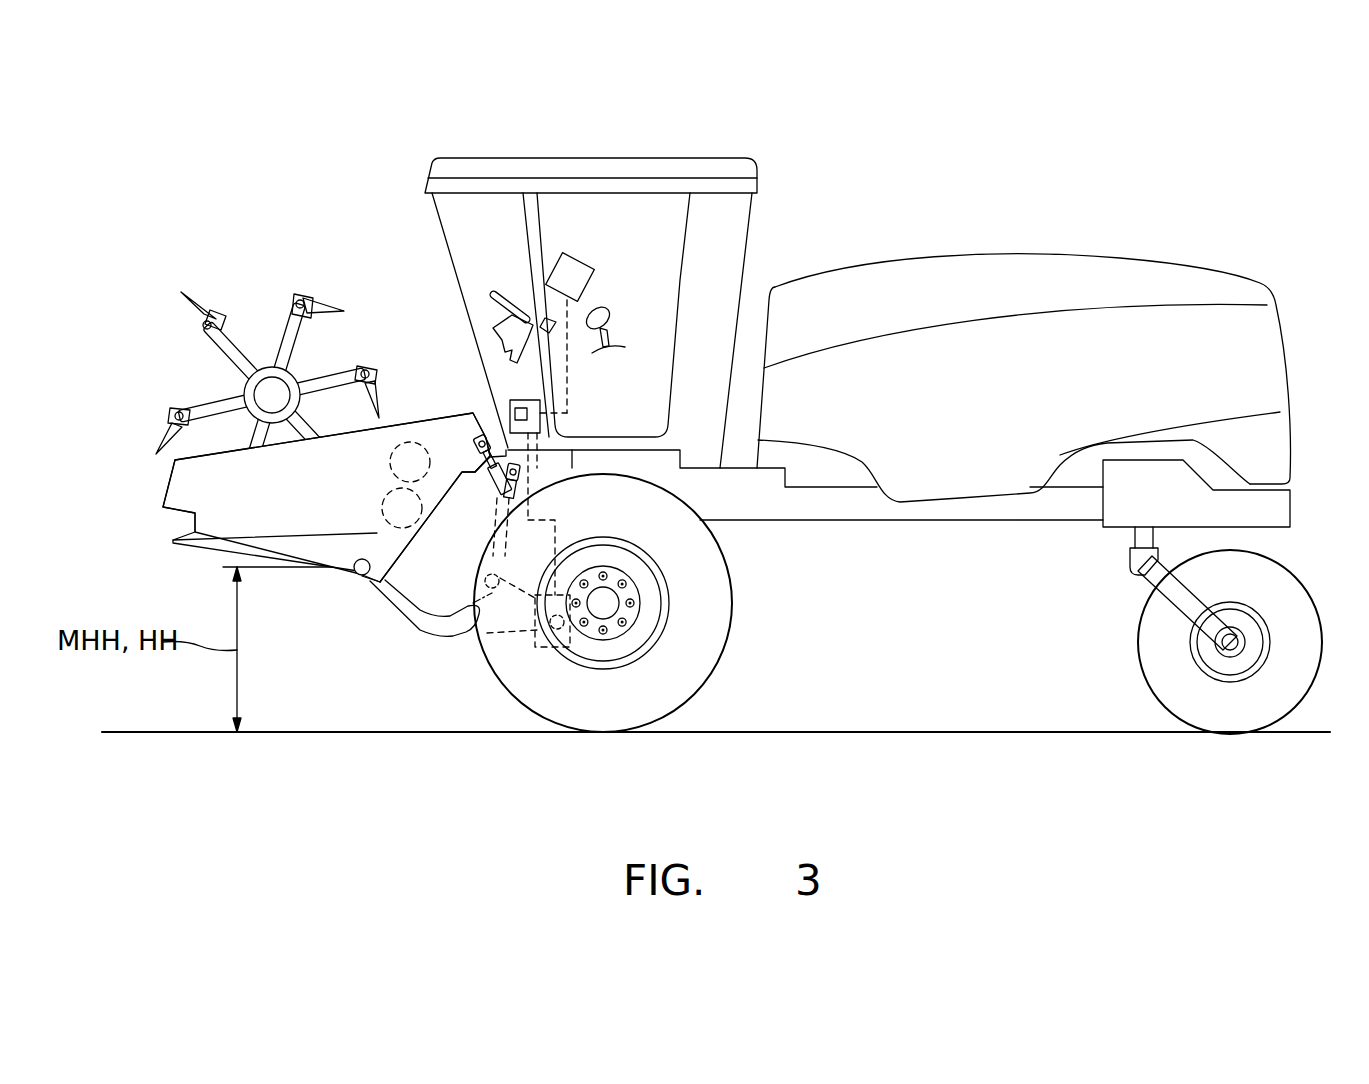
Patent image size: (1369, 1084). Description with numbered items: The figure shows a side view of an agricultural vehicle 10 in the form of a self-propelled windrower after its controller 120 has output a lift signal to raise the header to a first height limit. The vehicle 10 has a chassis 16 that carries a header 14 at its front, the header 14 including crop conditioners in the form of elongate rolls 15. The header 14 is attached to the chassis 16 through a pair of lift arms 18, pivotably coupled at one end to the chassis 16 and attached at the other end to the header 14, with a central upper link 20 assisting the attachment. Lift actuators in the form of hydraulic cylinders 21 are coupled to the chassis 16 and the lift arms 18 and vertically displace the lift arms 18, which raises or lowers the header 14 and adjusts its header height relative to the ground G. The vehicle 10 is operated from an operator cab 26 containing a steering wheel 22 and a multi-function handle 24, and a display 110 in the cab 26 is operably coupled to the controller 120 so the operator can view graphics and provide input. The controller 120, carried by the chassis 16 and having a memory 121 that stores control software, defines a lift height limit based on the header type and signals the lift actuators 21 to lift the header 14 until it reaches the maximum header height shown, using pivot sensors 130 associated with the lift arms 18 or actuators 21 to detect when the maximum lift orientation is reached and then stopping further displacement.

The agricultural vehicle 10 is at (945, 202).
The header 14 is at (217, 442).
The elongate rolls 15 is at (388, 498).
The chassis 16 is at (988, 521).
The lift arms 18 is at (415, 622).
The central upper link 20 is at (490, 472).
The hydraulic cylinders 21 is at (503, 494).
The steering wheel 22 is at (507, 283).
The multi-function handle 24 is at (613, 315).
The operator cab 26 is at (540, 158).
The display 110 is at (578, 256).
The controller 120 is at (510, 406).
The memory 121 is at (515, 414).
The pivot sensors 130 is at (545, 652).
The ground G is at (330, 735).